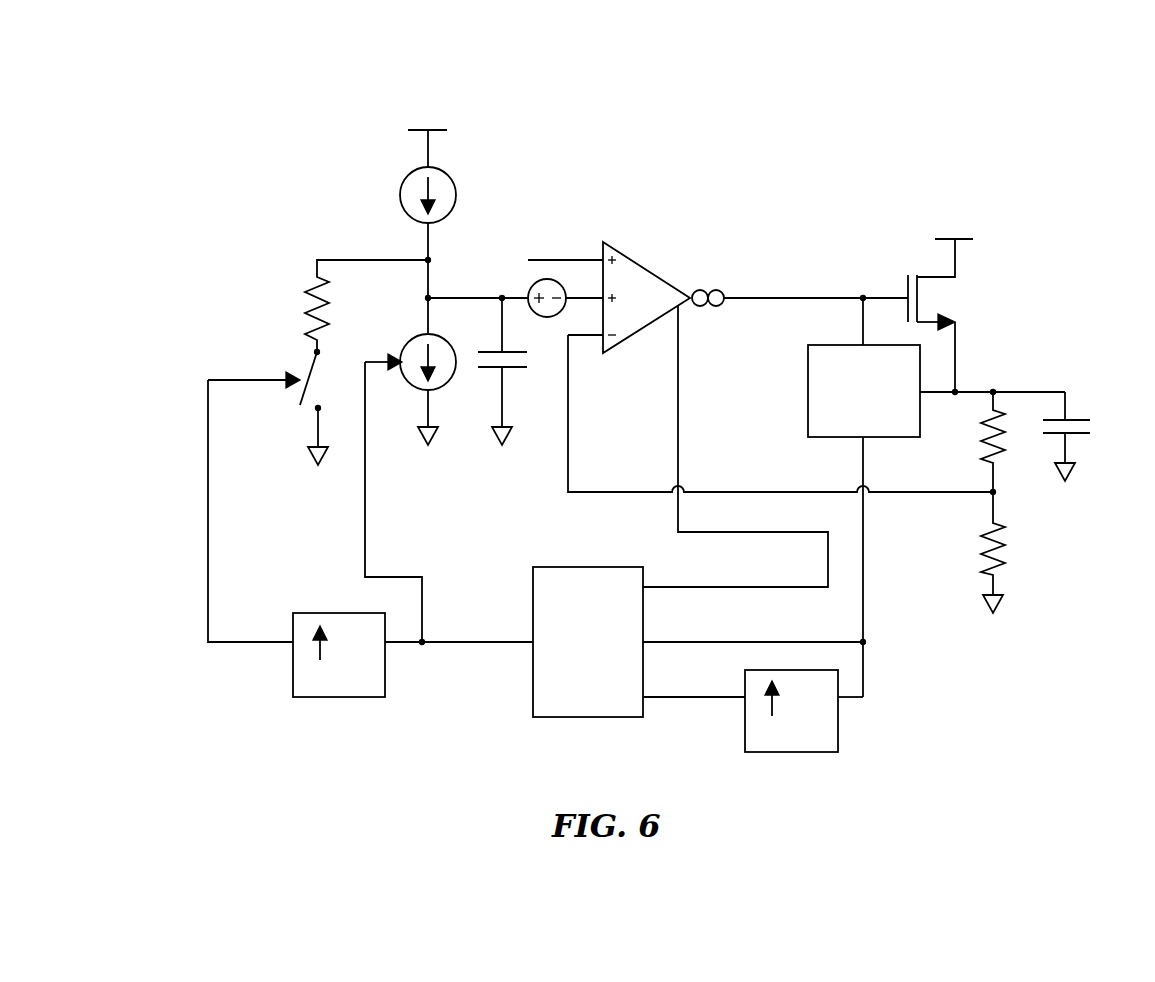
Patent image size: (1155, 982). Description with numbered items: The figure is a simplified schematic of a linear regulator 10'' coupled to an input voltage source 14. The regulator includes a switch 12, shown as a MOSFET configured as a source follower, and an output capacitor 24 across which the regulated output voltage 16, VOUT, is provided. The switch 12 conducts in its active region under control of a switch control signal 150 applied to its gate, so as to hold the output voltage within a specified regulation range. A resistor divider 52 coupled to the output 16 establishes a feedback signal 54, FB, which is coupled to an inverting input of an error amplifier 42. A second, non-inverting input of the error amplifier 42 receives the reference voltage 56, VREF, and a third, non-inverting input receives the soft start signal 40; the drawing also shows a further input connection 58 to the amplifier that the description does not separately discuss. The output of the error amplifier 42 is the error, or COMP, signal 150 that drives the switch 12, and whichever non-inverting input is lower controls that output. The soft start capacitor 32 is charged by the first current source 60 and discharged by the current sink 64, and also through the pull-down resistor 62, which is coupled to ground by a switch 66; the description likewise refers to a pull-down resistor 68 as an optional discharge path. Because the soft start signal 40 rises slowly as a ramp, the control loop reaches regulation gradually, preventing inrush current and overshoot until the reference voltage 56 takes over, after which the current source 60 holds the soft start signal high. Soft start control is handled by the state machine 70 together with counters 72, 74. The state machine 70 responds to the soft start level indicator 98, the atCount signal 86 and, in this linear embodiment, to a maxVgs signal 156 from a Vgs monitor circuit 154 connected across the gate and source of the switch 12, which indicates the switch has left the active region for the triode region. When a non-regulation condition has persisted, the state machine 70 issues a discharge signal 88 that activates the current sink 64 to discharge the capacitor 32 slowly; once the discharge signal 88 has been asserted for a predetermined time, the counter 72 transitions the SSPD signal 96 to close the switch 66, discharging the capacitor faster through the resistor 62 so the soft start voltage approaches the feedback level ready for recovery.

The linear regulator 10'' is at (898, 117).
The first current source 60 is at (452, 165).
The pull-down resistor 62 is at (306, 300).
The current sink 64 is at (413, 335).
The switch 66 is at (302, 365).
The soft start signal 40 is at (462, 296).
The soft start capacitor 32 is at (492, 360).
The pull-down resistor 68 is at (547, 318).
The reference voltage 56 is at (581, 258).
The comparator input 58 is at (575, 293).
The error amplifier 42 is at (646, 297).
The switch control signal 150 is at (787, 296).
The input voltage source 14 is at (963, 243).
The switch 12 is at (955, 300).
The Vgs monitor circuit 154 is at (936, 367).
The regulated output voltage 16 is at (1038, 392).
The output capacitor 24 is at (1080, 418).
The resistor divider 52 is at (1022, 565).
The feedback signal 54 is at (930, 496).
The soft start level indicator 98 is at (680, 408).
The state machine 70 is at (588, 642).
The counter 72 is at (339, 655).
The counter 74 is at (791, 711).
The maxVgs signal 156 is at (826, 640).
The atCount signal 86 is at (697, 701).
The discharge signal 88 is at (458, 646).
The SSPD signal 96 is at (255, 646).